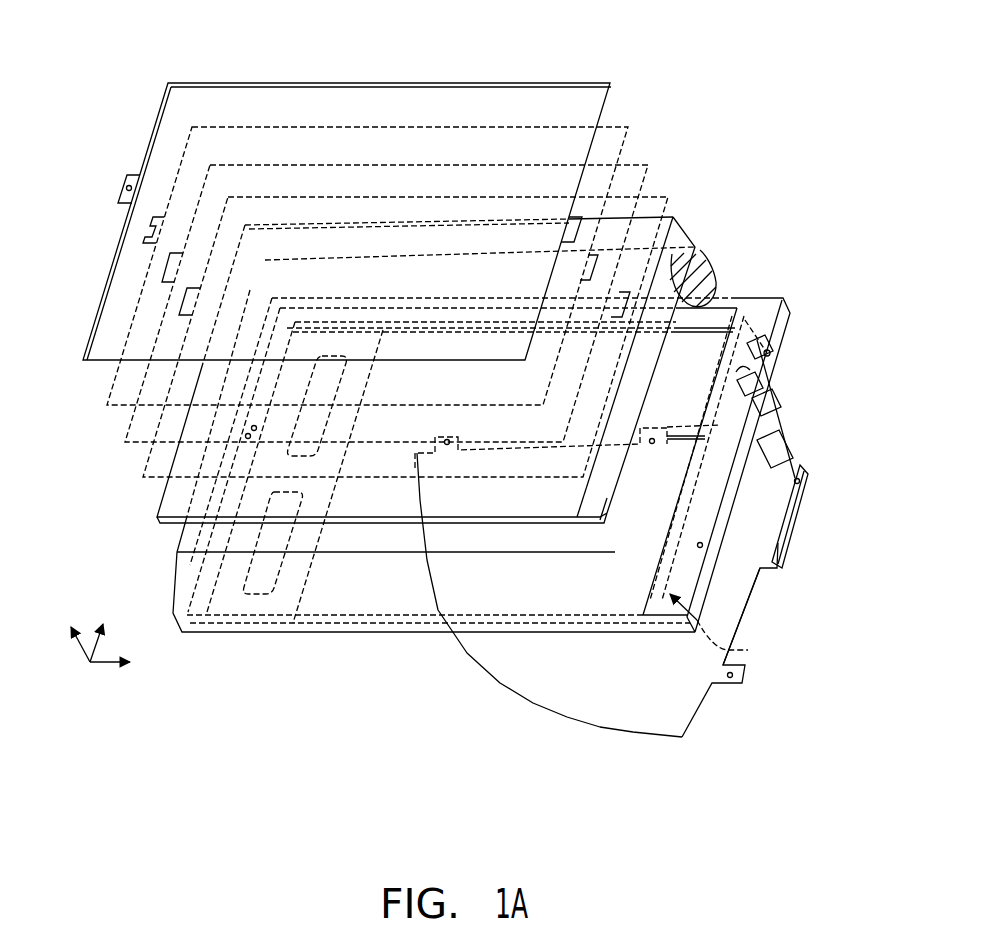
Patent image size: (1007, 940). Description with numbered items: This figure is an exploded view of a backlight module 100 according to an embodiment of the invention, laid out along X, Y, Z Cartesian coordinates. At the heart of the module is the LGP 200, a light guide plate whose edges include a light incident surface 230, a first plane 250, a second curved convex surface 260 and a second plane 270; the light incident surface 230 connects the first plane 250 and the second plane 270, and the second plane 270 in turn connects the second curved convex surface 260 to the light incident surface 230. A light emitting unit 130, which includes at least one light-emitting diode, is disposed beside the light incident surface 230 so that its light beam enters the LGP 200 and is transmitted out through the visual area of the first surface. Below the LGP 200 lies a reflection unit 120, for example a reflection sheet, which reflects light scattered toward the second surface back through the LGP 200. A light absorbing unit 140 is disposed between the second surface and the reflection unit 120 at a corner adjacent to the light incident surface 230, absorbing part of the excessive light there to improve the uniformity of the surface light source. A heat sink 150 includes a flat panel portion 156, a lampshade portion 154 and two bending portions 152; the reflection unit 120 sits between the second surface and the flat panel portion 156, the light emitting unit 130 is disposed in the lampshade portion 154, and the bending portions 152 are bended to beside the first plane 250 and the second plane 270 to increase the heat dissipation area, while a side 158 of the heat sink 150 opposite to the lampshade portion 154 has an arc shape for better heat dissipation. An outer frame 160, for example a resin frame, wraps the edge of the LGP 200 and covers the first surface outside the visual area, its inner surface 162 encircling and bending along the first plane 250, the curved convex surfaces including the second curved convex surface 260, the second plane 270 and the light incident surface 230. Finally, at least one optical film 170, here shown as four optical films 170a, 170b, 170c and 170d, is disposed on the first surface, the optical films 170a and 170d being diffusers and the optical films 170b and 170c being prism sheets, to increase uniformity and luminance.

The backlight module 100 is at (461, 425).
The reflection unit 120 is at (348, 543).
The light emitting unit 130 is at (743, 369).
The light absorbing unit 140 is at (712, 288).
The heat sink 150 is at (730, 620).
The bending portion 152 is at (789, 525).
The lampshade portion 154 is at (776, 450).
The flat panel portion 156 is at (740, 553).
The side 158 is at (500, 685).
The outer frame 160 is at (782, 330).
The inner surface 162 is at (750, 651).
The optical film 170 is at (442, 253).
The optical film 170a is at (669, 196).
The optical film 170b is at (649, 164).
The optical film 170c is at (629, 126).
The optical film 170d is at (612, 83).
The LGP 200 is at (478, 343).
The light incident surface 230 is at (698, 245).
The first plane 250 is at (675, 212).
The second curved convex surface 260 is at (607, 498).
The second plane 270 is at (676, 322).